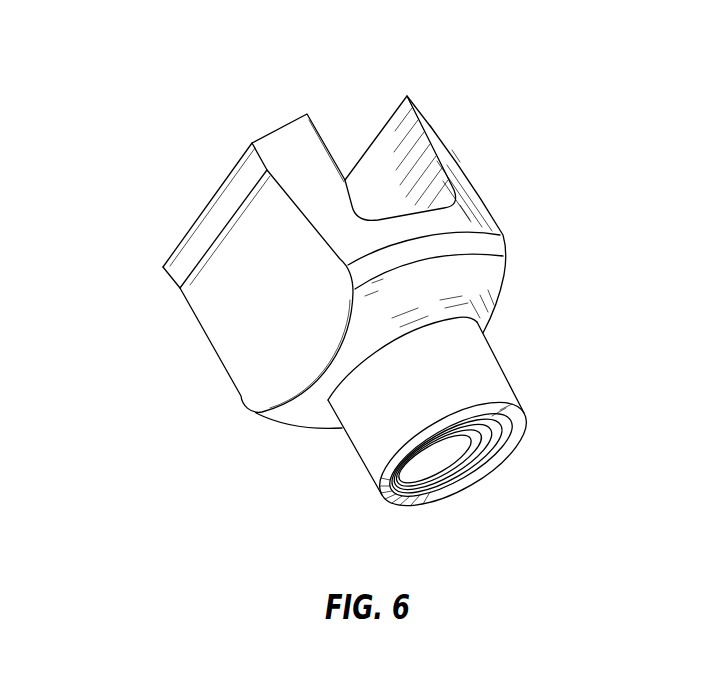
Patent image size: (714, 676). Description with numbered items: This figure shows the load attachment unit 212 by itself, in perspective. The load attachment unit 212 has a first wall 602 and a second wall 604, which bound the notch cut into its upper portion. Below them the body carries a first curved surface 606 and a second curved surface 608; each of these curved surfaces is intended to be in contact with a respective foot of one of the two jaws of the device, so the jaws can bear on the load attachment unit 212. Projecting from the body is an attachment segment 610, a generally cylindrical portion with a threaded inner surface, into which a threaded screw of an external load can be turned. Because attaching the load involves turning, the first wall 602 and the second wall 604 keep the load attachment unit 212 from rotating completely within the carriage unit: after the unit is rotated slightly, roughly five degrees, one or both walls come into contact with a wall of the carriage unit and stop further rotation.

The load attachment unit 212 is at (136, 64).
The first wall 602 is at (226, 327).
The second wall 604 is at (442, 125).
The first curved surface 606 is at (312, 417).
The second curved surface 608 is at (487, 282).
The attachment segment 610 is at (372, 444).